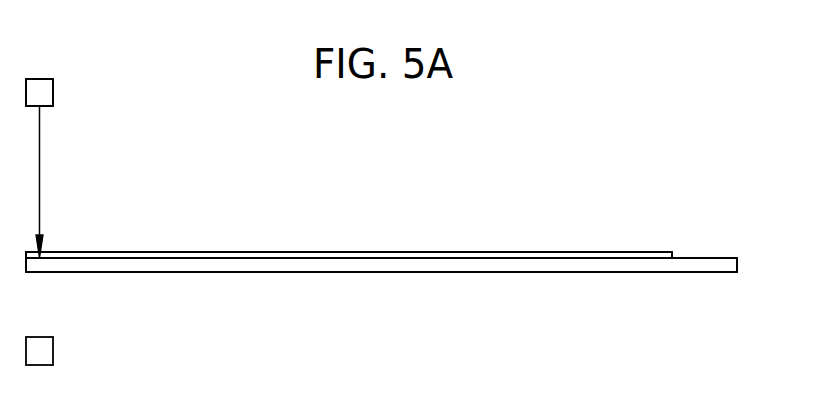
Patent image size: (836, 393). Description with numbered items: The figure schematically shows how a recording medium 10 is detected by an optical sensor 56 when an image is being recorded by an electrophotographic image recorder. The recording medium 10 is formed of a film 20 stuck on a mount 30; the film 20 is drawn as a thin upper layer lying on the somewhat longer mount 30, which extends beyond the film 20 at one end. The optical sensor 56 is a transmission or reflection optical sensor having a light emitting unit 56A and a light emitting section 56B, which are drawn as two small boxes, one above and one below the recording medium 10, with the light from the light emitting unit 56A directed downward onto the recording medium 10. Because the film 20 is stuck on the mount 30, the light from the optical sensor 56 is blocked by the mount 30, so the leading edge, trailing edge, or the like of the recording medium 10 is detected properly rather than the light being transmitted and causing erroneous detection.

The recording medium 10 is at (735, 193).
The film 20 is at (645, 240).
The mount 30 is at (686, 285).
The optical sensor 56 is at (52, 63).
The light emitting unit 56A is at (53, 92).
The light emitting section 56B is at (53, 350).